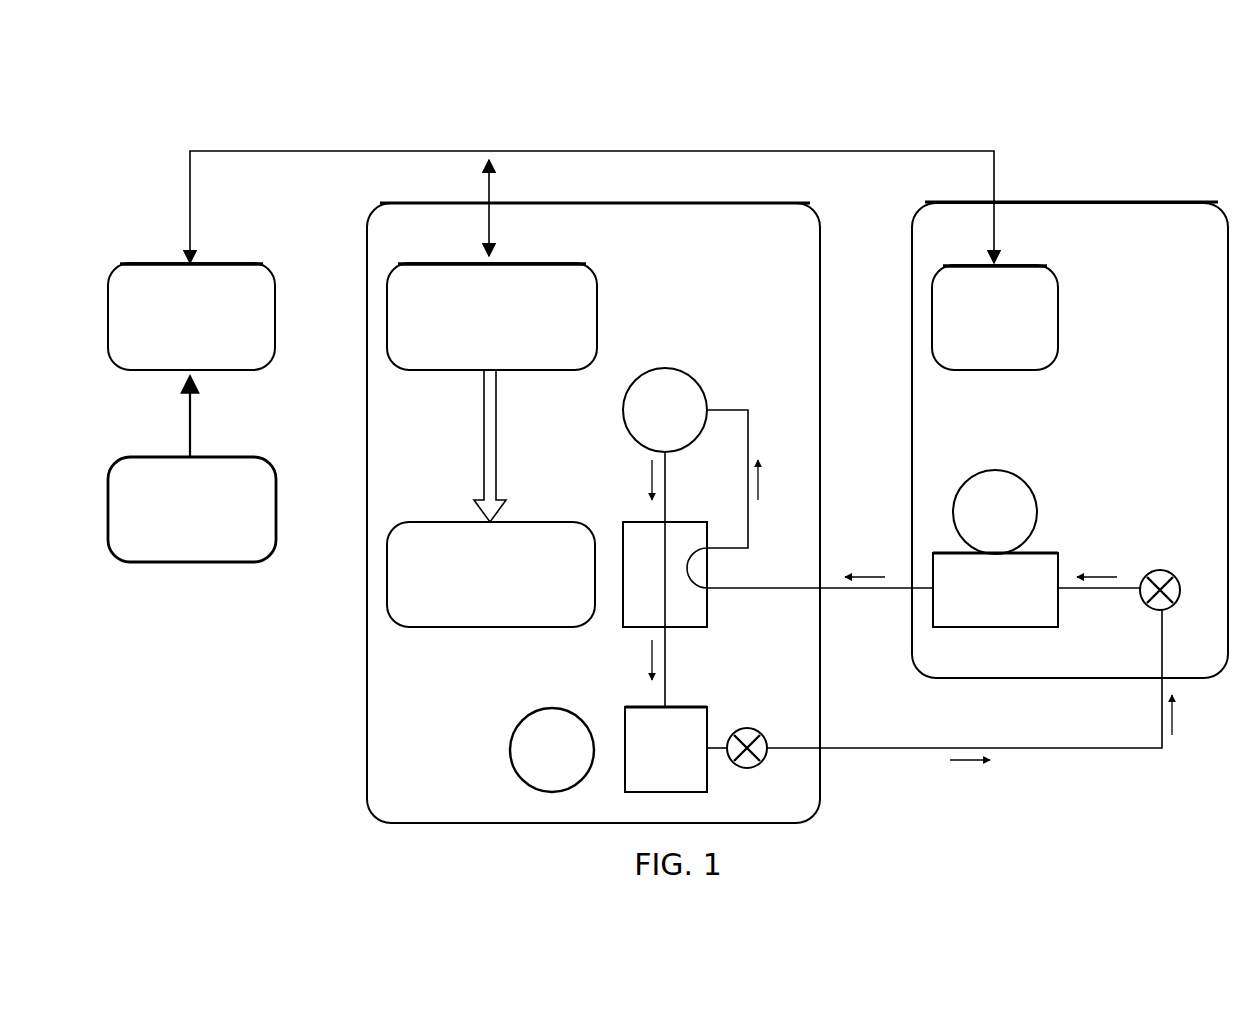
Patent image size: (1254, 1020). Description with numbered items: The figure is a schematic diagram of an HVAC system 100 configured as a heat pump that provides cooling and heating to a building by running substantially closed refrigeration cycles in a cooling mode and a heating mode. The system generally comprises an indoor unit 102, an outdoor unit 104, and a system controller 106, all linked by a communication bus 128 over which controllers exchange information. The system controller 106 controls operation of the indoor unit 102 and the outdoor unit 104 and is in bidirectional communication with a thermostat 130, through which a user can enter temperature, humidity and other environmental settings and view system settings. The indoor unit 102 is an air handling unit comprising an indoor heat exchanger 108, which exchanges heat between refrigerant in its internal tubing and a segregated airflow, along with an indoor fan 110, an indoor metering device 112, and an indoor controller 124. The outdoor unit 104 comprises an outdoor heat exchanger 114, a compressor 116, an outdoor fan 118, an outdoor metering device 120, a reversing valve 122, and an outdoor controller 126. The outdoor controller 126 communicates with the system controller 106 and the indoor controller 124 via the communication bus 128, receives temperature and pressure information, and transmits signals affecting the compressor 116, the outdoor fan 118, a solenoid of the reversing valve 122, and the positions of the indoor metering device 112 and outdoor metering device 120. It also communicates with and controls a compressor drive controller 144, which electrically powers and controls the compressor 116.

The HVAC system 100 is at (308, 100).
The indoor unit 102 is at (1162, 198).
The outdoor unit 104 is at (362, 253).
The system controller 106 is at (191, 316).
The indoor heat exchanger 108 is at (1036, 590).
The indoor fan 110 is at (995, 512).
The indoor metering device 112 is at (1170, 608).
The outdoor heat exchanger 114 is at (666, 749).
The compressor 116 is at (665, 410).
The outdoor fan 118 is at (552, 750).
The outdoor metering device 120 is at (758, 765).
The reversing valve 122 is at (708, 600).
The indoor controller 124 is at (995, 317).
The outdoor controller 126 is at (492, 316).
The communication bus 128 is at (430, 151).
The thermostat 130 is at (192, 469).
The compressor drive controller 144 is at (491, 574).